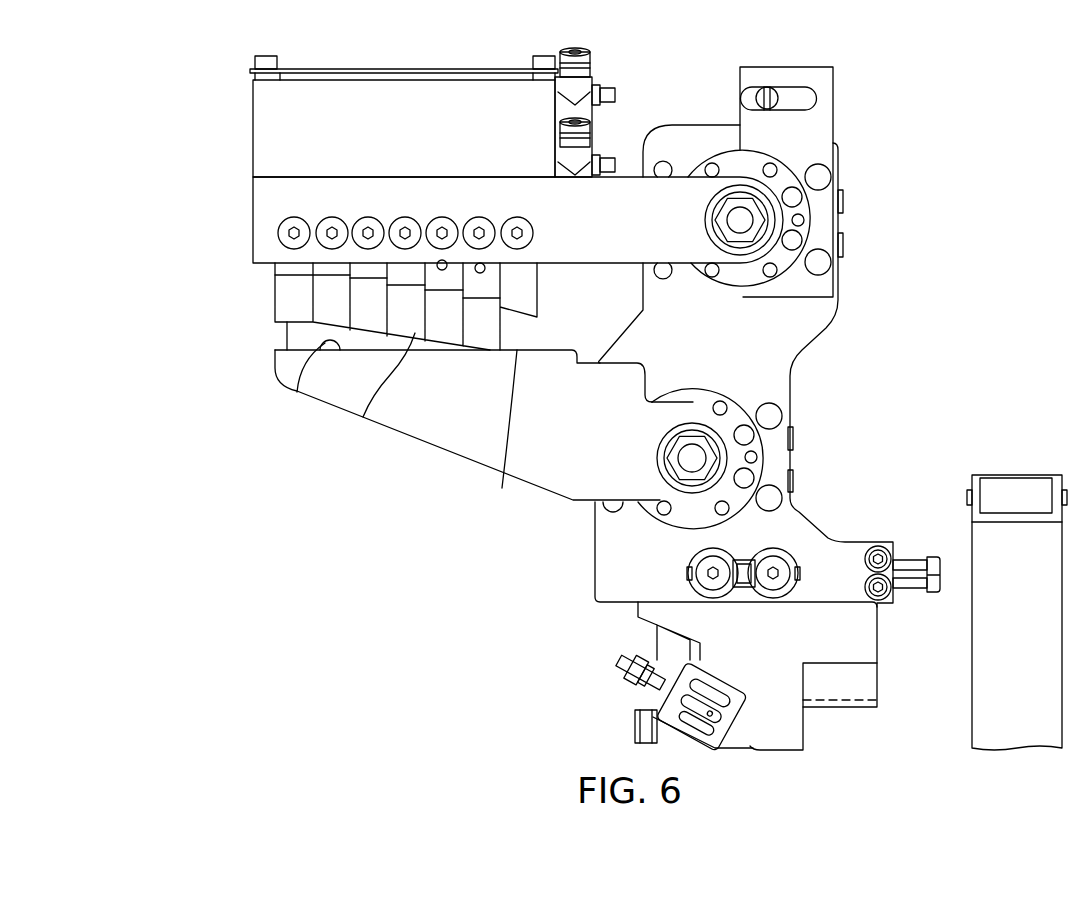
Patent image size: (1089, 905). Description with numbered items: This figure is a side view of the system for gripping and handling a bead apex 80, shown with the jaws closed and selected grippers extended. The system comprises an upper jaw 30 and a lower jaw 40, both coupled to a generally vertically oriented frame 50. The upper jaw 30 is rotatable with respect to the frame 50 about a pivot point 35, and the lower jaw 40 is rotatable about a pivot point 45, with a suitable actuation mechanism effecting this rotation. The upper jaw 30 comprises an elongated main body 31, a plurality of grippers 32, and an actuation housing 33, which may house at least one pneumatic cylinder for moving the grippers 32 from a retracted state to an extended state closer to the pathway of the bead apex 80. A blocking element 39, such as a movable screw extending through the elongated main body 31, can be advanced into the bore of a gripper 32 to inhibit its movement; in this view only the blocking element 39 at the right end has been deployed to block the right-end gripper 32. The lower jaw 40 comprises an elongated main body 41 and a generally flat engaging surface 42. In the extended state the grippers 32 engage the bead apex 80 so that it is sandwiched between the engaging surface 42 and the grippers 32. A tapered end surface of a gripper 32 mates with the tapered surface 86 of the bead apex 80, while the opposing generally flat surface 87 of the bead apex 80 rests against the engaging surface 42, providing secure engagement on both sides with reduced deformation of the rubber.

The upper jaw 30 is at (510, 193).
The elongated main body 31 is at (492, 149).
The grippers 32 is at (370, 307).
The actuation housing 33 is at (375, 127).
The pivot point 35 is at (738, 220).
The blocking element 39 is at (515, 230).
The lower jaw 40 is at (553, 421).
The elongated main body 41 is at (457, 418).
The engaging surface 42 is at (503, 429).
The pivot point 45 is at (692, 458).
The frame 50 is at (840, 350).
The bead apex 80 is at (298, 338).
The tapered surface 86 is at (382, 391).
The surface 87 is at (304, 383).